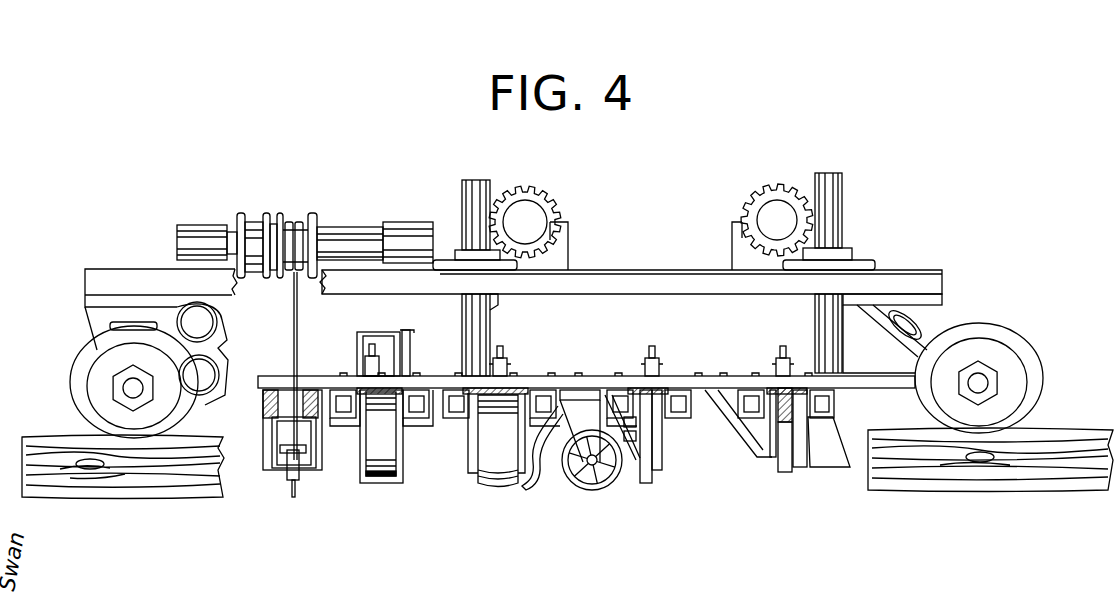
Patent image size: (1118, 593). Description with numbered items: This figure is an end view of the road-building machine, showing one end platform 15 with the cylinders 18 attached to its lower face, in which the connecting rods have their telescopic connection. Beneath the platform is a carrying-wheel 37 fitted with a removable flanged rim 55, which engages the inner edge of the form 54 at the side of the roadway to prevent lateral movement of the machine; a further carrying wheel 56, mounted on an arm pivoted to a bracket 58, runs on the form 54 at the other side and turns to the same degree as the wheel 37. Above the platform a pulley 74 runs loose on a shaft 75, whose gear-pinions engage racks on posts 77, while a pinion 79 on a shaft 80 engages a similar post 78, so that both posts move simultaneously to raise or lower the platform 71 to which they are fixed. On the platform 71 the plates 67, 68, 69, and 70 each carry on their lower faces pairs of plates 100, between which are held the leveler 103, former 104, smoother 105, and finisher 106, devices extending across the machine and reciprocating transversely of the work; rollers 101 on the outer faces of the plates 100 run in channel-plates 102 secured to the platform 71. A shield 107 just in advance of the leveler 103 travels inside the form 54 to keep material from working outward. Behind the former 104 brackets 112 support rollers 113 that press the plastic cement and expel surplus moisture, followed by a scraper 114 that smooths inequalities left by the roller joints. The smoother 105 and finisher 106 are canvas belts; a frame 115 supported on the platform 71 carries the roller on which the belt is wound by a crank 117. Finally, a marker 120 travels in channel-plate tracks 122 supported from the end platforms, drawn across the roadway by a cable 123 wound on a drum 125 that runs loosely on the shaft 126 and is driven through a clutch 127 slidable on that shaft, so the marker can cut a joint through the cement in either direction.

The end platform 15 is at (132, 269).
The cylinder 18 is at (218, 323).
The carrying-wheel 37 is at (102, 378).
The form 54 is at (43, 450).
The flanged rim 55 is at (97, 350).
The carrying wheel 56 is at (1010, 382).
The bracket 58 is at (942, 312).
The plate 67 is at (771, 388).
The plate 68 is at (640, 390).
The plate 69 is at (515, 388).
The plate 70 is at (367, 387).
The platform 71 is at (697, 374).
The pulley 74 is at (540, 192).
The shaft 75 is at (528, 222).
The post 77 is at (477, 340).
The post 78 is at (466, 205).
The gear pinion 79 is at (767, 194).
The shaft 80 is at (770, 220).
The plate 100 is at (398, 478).
The roller 101 is at (455, 414).
The channel-plate 102 is at (340, 418).
The leveler 103 is at (788, 470).
The former 104 is at (647, 472).
The smoother 105 is at (498, 480).
The finisher 106 is at (378, 447).
The shield 107 is at (828, 458).
The bracket 112 is at (582, 400).
The roller 113 is at (590, 472).
The scraper 114 is at (548, 478).
The frame 115 is at (360, 334).
The crank 117 is at (407, 332).
The marker 120 is at (292, 487).
The channel-plate track 122 is at (282, 458).
The cable 123 is at (298, 322).
The drum 125 is at (287, 220).
The shaft 126 is at (362, 236).
The clutch 127 is at (250, 232).